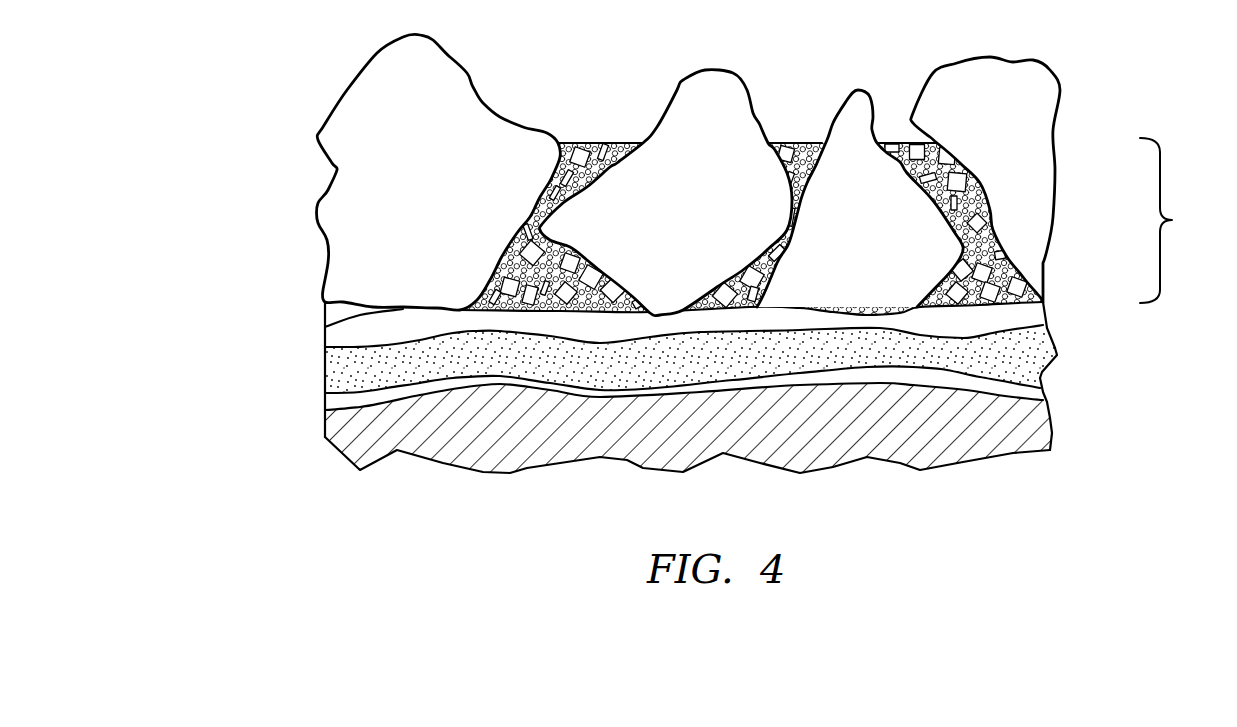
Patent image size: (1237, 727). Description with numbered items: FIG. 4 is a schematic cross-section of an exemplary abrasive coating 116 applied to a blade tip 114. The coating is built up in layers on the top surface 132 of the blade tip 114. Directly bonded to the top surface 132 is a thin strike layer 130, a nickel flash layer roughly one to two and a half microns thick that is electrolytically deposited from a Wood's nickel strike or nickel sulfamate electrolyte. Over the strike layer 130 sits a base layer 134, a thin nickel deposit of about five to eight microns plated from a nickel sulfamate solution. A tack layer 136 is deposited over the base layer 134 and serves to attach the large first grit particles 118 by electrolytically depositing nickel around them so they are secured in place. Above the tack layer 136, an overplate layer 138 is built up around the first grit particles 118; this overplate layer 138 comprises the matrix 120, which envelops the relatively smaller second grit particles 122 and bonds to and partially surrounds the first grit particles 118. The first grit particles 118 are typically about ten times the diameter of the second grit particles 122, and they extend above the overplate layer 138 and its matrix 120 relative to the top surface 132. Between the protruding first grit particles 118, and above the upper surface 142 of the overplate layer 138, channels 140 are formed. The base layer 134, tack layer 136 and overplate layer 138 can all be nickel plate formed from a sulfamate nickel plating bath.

The blade tip 114 is at (1030, 440).
The abrasive coating 116 is at (285, 259).
The first grit particles 118 is at (1013, 155).
The matrix 120 is at (587, 142).
The second grit particles 122 is at (792, 143).
The strike layer 130 is at (1033, 392).
The top surface 132 is at (312, 398).
The base layer 134 is at (1023, 367).
The tack layer 136 is at (1023, 313).
The overplate layer 138 is at (1185, 220).
The channels 140 is at (812, 127).
The upper surface 142 is at (612, 140).